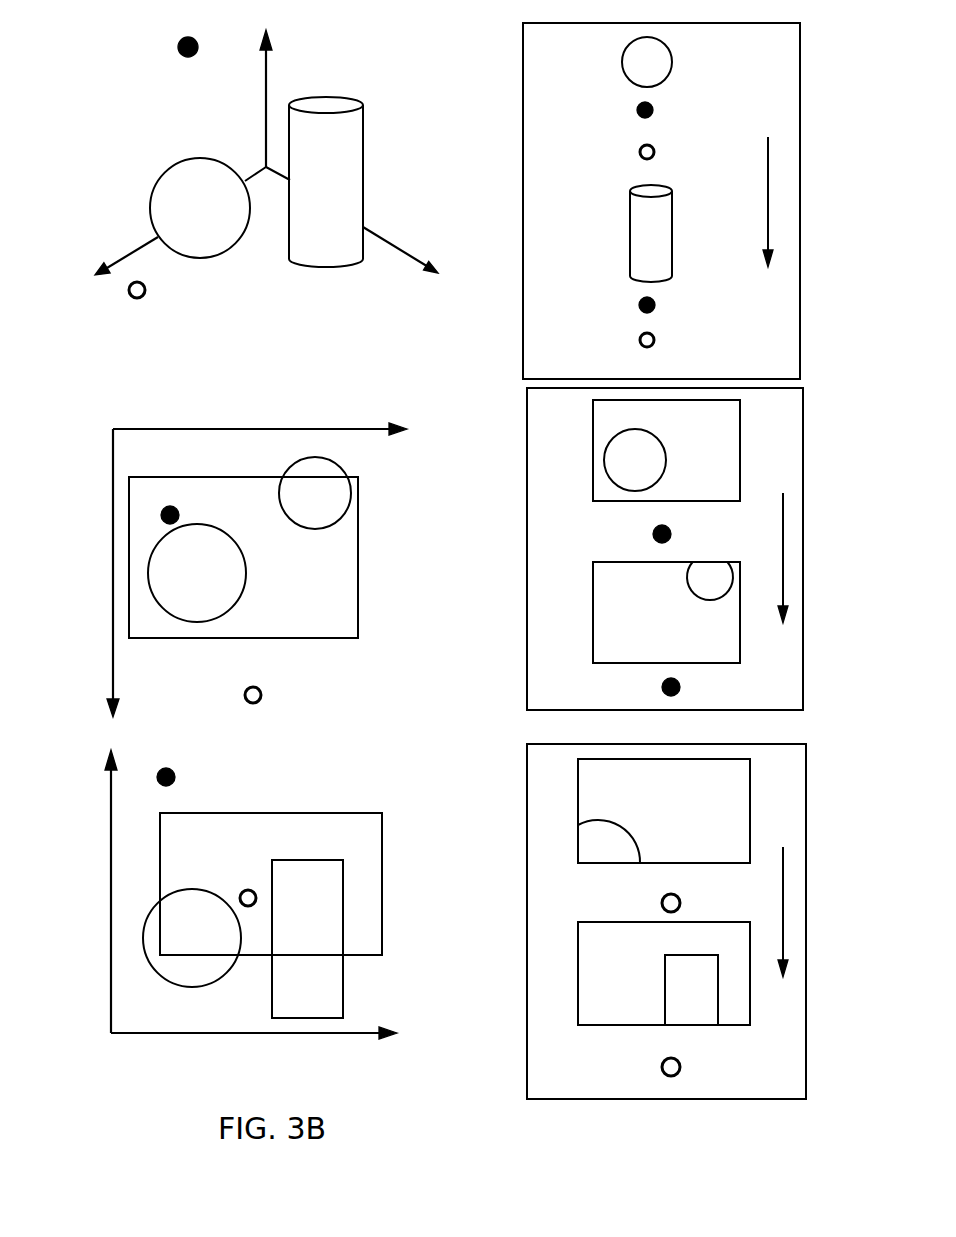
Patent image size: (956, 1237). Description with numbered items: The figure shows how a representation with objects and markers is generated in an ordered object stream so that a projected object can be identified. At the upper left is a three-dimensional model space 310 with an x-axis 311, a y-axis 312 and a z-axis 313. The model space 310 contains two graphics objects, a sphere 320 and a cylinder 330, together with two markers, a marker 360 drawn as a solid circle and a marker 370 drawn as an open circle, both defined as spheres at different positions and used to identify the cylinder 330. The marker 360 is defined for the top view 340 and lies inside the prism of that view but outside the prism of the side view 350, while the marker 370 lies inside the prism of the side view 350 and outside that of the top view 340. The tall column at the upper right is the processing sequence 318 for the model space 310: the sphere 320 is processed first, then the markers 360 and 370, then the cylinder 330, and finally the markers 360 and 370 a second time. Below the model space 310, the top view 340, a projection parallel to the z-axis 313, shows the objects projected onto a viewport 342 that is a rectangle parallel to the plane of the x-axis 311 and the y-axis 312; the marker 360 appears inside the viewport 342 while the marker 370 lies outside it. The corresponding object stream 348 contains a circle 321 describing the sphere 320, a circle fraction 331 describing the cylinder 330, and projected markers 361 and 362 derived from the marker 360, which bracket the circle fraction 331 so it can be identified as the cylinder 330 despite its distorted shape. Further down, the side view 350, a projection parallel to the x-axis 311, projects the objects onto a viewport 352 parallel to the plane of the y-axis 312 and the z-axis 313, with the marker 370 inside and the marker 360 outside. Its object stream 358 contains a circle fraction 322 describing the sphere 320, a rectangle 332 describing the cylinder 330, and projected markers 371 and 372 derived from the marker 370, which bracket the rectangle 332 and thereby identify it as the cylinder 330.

The model space 310 is at (137, 47).
The x-axis 311 is at (128, 253).
The y-axis 312 is at (423, 255).
The z-axis 313 is at (267, 72).
The processing sequence 318 is at (800, 82).
The sphere 320 is at (184, 222).
The circle 321 is at (637, 430).
The circle fraction 322 is at (607, 818).
The cylinder 330 is at (310, 222).
The circle fraction 331 is at (688, 582).
The rectangle 332 is at (663, 992).
The top view 340 is at (162, 372).
The viewport 342 is at (277, 638).
The object stream 348 is at (803, 493).
The side view 350 is at (220, 742).
The viewport 352 is at (295, 813).
The object stream 358 is at (806, 897).
The marker 360 is at (197, 57).
The projected marker 361 is at (652, 535).
The projected marker 362 is at (662, 688).
The marker 370 is at (141, 299).
The projected marker 371 is at (662, 902).
The projected marker 372 is at (662, 1067).